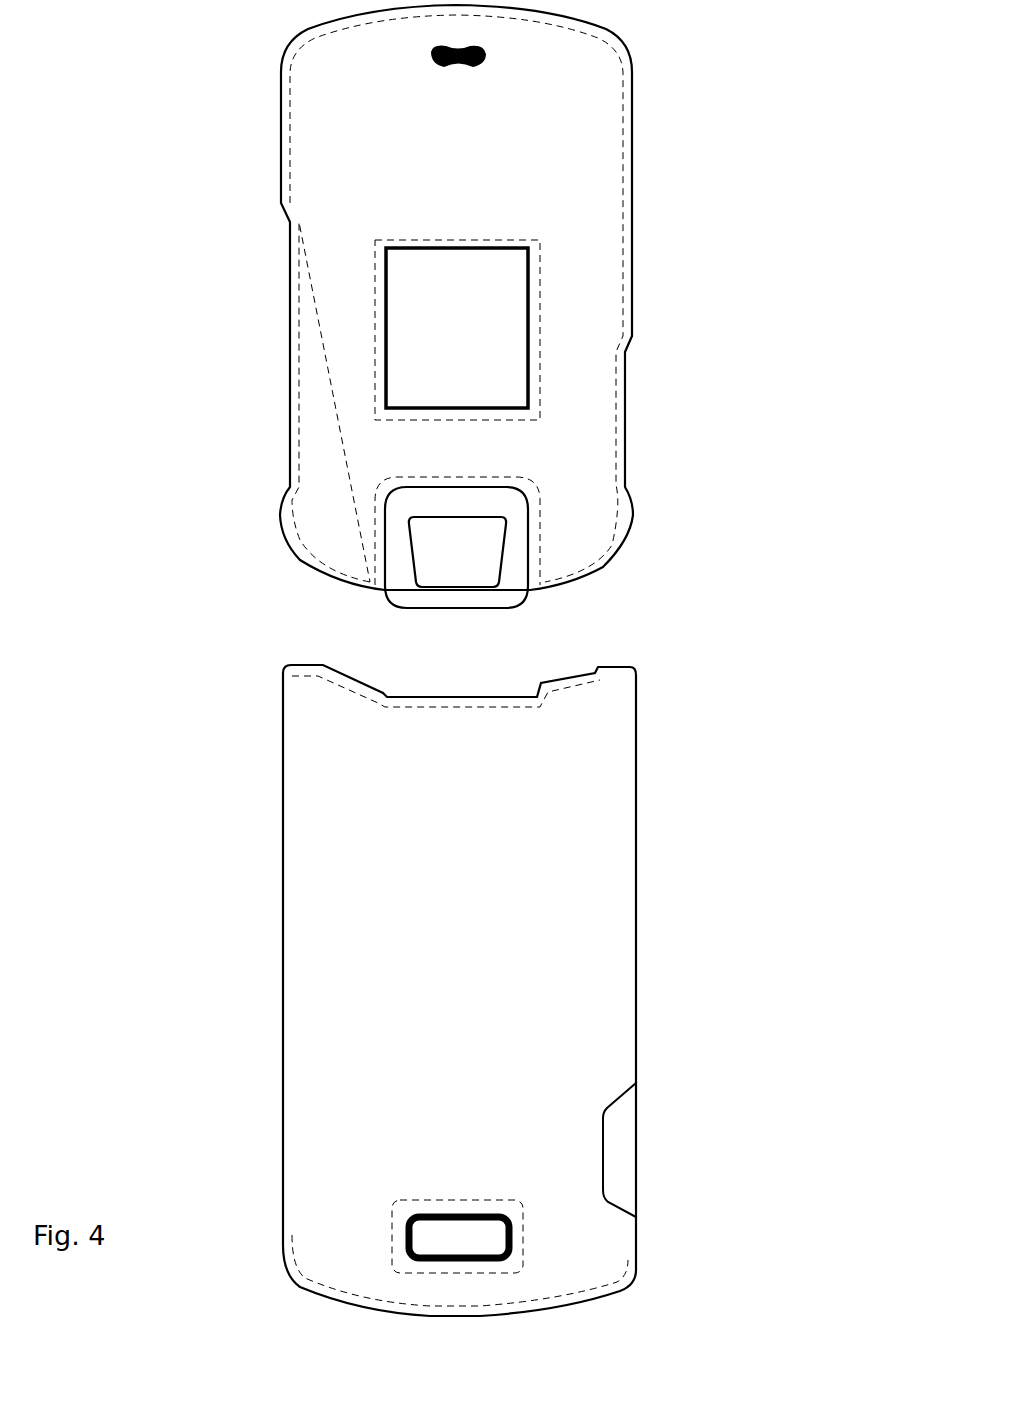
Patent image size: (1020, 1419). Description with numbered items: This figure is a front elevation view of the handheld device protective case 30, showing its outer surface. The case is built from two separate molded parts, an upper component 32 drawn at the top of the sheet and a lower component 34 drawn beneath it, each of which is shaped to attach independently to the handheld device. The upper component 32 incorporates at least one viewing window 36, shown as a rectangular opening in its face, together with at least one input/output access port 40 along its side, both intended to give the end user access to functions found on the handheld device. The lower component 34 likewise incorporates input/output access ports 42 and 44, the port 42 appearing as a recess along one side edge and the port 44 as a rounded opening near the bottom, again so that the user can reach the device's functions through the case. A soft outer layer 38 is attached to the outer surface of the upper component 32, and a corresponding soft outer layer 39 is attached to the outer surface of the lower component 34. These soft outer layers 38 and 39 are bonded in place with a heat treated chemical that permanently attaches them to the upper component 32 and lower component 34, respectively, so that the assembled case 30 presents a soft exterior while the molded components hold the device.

The handheld device protective case 30 is at (595, 660).
The upper component 32 is at (632, 72).
The lower component 34 is at (636, 678).
The viewing window 36 is at (510, 299).
The soft outer layer 38 is at (576, 167).
The soft outer layer 39 is at (604, 828).
The input/output access port 40 is at (634, 383).
The input/output access port 42 is at (618, 1150).
The input/output access port 44 is at (487, 1239).